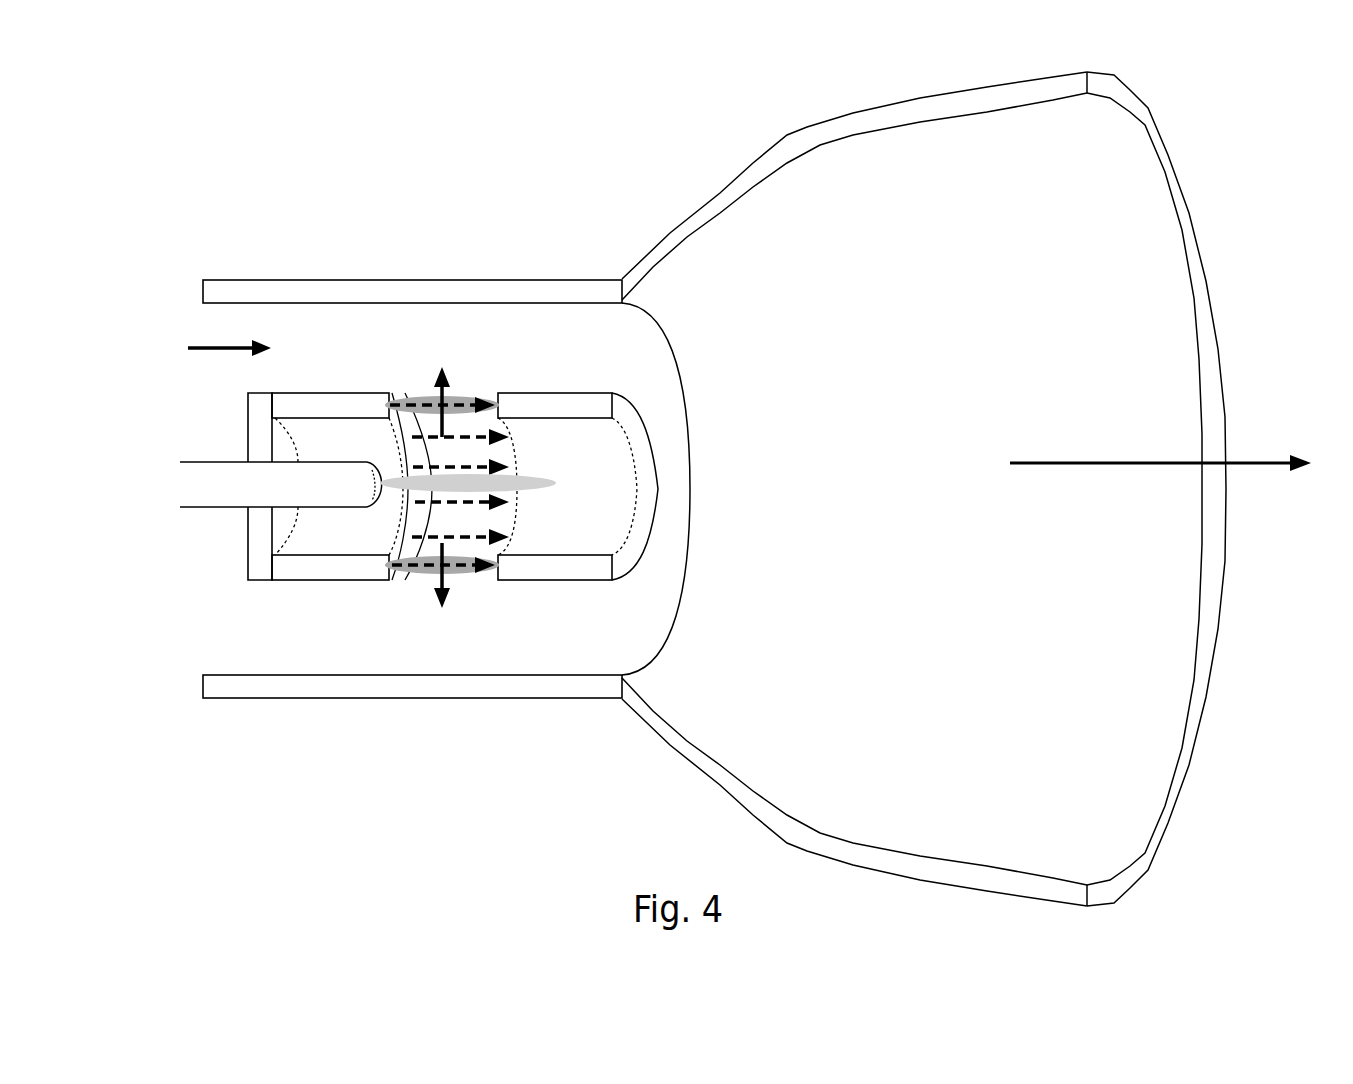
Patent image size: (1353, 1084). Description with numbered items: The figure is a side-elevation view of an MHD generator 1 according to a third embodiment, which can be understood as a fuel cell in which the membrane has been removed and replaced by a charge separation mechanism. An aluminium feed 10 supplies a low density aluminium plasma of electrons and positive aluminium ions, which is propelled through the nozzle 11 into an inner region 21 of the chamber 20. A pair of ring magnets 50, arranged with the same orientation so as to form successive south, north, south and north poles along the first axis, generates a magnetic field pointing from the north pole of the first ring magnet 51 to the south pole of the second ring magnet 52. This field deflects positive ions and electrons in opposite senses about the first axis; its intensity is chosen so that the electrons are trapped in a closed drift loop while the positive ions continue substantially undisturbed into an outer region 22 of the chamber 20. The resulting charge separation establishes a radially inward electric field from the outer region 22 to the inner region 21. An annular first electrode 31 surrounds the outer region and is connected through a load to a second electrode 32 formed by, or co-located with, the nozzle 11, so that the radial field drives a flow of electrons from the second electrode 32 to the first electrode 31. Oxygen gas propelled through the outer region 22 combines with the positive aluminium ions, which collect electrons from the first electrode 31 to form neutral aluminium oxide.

The plasma generating apparatus 1 is at (210, 240).
The aluminum electrode rod 10 is at (172, 487).
The nozzle 11 is at (376, 490).
The second electrode 32 is at (345, 503).
The first electrode 31 is at (523, 698).
The chamber 20 is at (379, 585).
The inner region 21 is at (457, 513).
The outer region 22 is at (445, 625).
The pair of ring magnets 50 is at (453, 376).
The first ring magnet 51 is at (303, 392).
The second ring magnet 52 is at (560, 393).